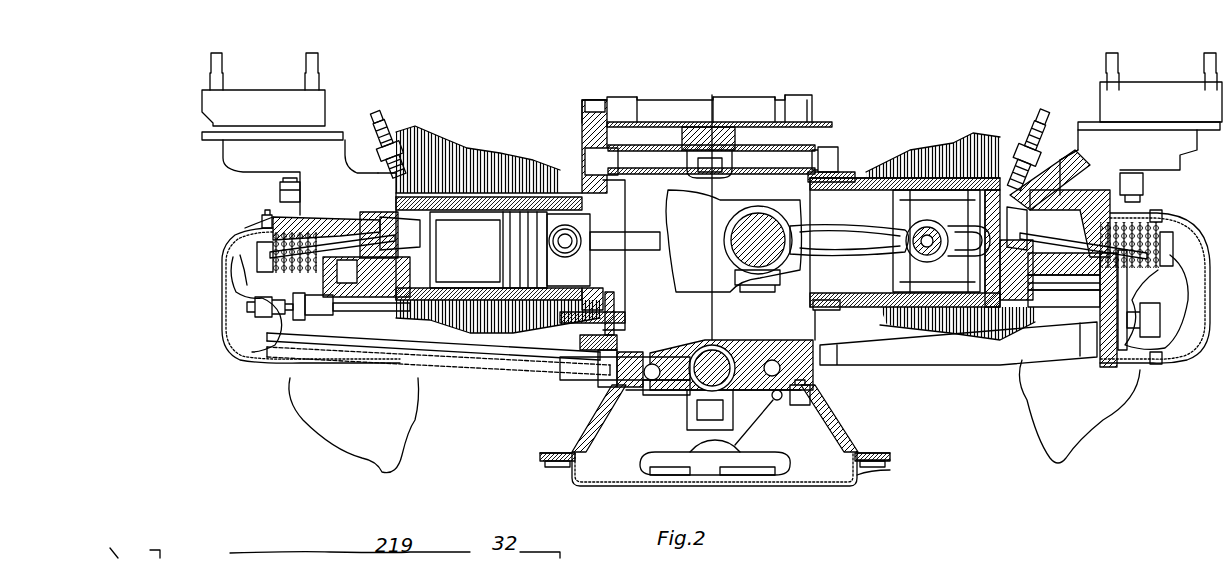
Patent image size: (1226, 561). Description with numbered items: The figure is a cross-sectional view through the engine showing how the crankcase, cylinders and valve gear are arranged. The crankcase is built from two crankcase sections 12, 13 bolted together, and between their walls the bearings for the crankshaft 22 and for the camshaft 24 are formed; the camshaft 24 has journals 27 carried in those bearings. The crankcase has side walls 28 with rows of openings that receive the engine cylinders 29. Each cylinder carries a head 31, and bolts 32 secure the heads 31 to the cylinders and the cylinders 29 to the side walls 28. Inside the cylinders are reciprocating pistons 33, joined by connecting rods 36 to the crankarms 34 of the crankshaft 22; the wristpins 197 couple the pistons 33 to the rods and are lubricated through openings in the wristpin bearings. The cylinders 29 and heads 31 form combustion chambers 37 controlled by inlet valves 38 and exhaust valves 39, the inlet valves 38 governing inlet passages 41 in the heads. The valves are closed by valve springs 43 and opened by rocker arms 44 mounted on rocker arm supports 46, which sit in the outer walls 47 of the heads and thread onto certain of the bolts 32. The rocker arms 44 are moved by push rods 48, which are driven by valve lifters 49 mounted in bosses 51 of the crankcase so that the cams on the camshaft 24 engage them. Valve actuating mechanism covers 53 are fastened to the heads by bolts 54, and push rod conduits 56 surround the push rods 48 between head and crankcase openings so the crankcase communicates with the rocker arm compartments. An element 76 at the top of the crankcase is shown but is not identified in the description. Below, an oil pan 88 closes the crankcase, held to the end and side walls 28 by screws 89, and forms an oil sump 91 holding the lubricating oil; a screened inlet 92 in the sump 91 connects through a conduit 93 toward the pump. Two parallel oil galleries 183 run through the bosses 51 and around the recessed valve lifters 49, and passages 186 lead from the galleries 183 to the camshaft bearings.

The crankcase section 12 is at (825, 138).
The crankcase section 13 is at (580, 138).
The crankshaft 22 is at (730, 248).
The camshaft 24 is at (715, 396).
The journals 27 is at (318, 265).
The side walls 28 is at (614, 328).
The engine cylinders 29 is at (476, 150).
The heads 31 is at (345, 130).
The bolts 32 is at (300, 182).
The pistons 33 is at (505, 280).
The crankarms 34 is at (734, 217).
The connecting rods 36 is at (630, 232).
The combustion chambers 37 is at (422, 232).
The inlet valves 38 is at (1038, 230).
The exhaust valves 39 is at (390, 220).
The inlet passages 41 is at (1112, 178).
The valve springs 43 is at (268, 228).
The rocker arms 44 is at (232, 293).
The rocker arm supports 46 is at (247, 308).
The outer walls 47 is at (1102, 272).
The push rods 48 is at (477, 362).
The valve lifters 49 is at (605, 387).
The bosses 51 is at (636, 355).
The valve actuating mechanism covers 53 is at (226, 240).
The bolts 54 is at (258, 220).
The push rod conduits 56 is at (520, 380).
The crankcase cover 76 is at (806, 102).
The oil pan 88 is at (852, 486).
The screws 89 is at (554, 466).
The oil sump 91 is at (608, 486).
The screened inlet 92 is at (657, 462).
The conduit 93 is at (776, 415).
The oil galleries 183 is at (700, 360).
The passages 186 is at (668, 385).
The wristpins 197 is at (905, 250).